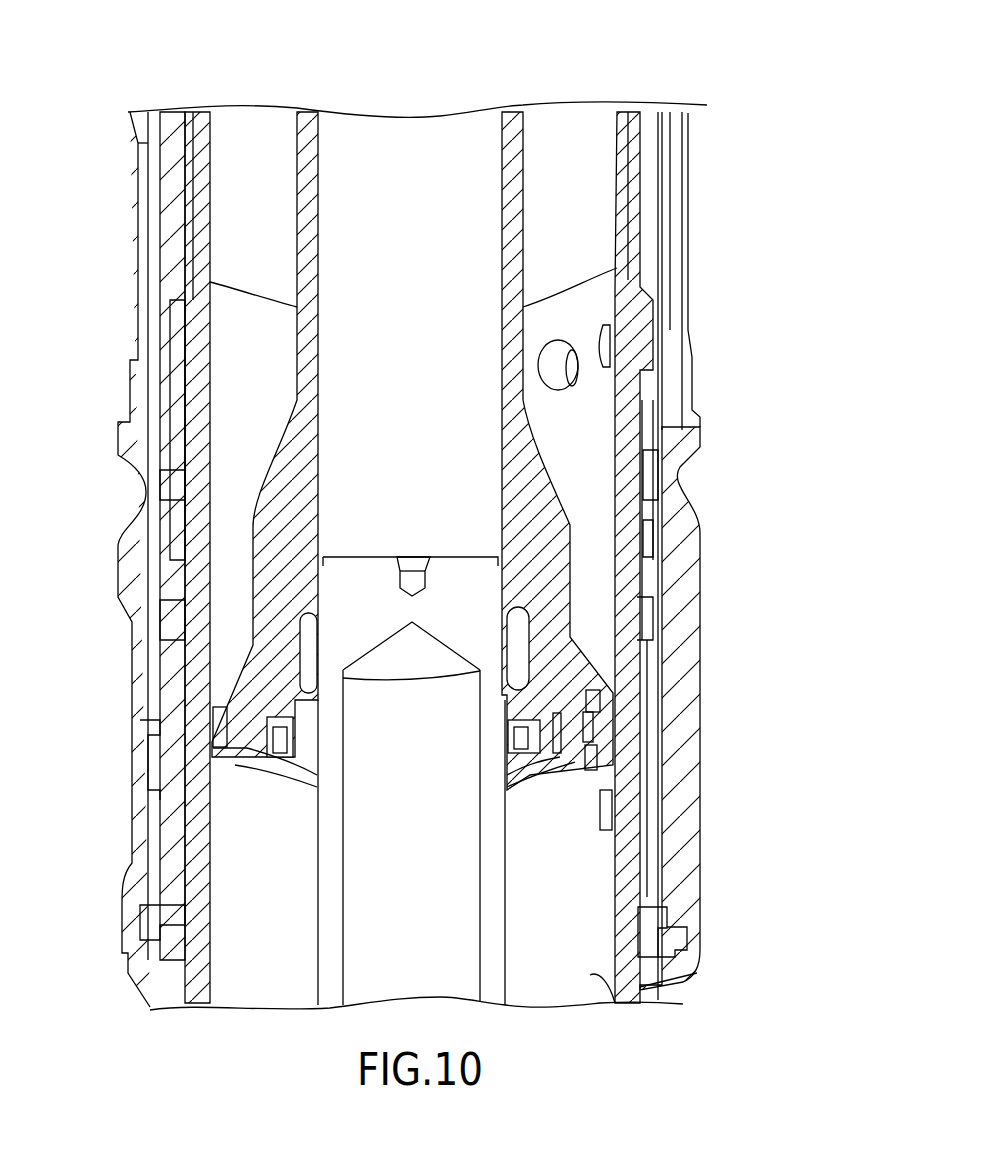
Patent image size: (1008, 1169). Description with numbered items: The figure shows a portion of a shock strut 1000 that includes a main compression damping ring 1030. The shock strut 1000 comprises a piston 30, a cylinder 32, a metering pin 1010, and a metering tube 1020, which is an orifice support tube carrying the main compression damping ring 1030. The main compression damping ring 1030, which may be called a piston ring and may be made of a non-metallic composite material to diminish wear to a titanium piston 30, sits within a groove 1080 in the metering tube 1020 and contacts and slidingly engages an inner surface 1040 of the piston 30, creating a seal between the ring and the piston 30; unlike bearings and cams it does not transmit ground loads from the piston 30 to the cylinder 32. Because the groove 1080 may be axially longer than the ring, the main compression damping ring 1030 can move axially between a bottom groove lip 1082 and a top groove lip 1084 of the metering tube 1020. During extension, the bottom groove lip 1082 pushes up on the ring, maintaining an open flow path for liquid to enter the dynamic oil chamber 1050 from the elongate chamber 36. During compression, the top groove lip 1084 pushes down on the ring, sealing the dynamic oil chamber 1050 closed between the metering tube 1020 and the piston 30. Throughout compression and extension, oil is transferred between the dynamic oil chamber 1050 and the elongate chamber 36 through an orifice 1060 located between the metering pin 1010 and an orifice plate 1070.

The shock strut 1000 is at (597, 74).
The piston 30 is at (630, 275).
The cylinder 32 is at (670, 197).
The elongate chamber 36 is at (239, 354).
The metering pin 1010 is at (510, 1000).
The metering tube 1020 is at (540, 472).
The main compression damping ring 1030 is at (595, 718).
The inner surface of piston 1040 is at (597, 1003).
The dynamic oil chamber 1050 is at (241, 854).
The orifice 1060 is at (520, 783).
The orifice plate 1070 is at (545, 725).
The groove 1080 is at (605, 740).
The bottom groove lip 1082 is at (612, 800).
The top groove lip 1084 is at (600, 690).